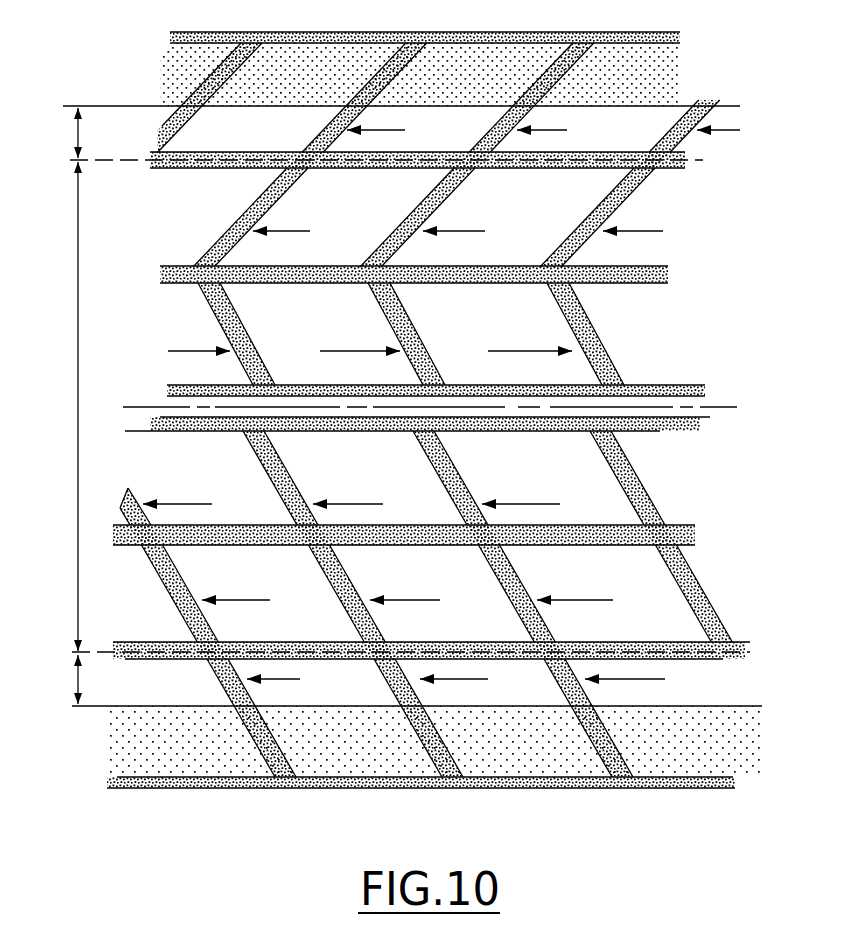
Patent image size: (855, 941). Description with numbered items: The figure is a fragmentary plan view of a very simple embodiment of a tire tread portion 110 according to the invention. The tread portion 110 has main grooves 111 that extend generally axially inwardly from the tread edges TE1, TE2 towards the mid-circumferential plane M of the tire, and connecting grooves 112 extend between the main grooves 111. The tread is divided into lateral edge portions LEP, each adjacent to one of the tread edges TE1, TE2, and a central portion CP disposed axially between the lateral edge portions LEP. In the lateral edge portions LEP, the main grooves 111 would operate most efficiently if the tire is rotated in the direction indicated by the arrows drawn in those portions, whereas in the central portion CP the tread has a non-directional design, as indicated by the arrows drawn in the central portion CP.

The tread portion 110 is at (118, 88).
The main grooves 111 is at (500, 122).
The connecting grooves 112 is at (548, 168).
The mid-circumferential plane M is at (718, 405).
The central portion CP is at (77, 406).
The lateral edge portions LEP is at (72, 148).
The tread edge TE1 is at (130, 710).
The tread edge TE2 is at (125, 105).